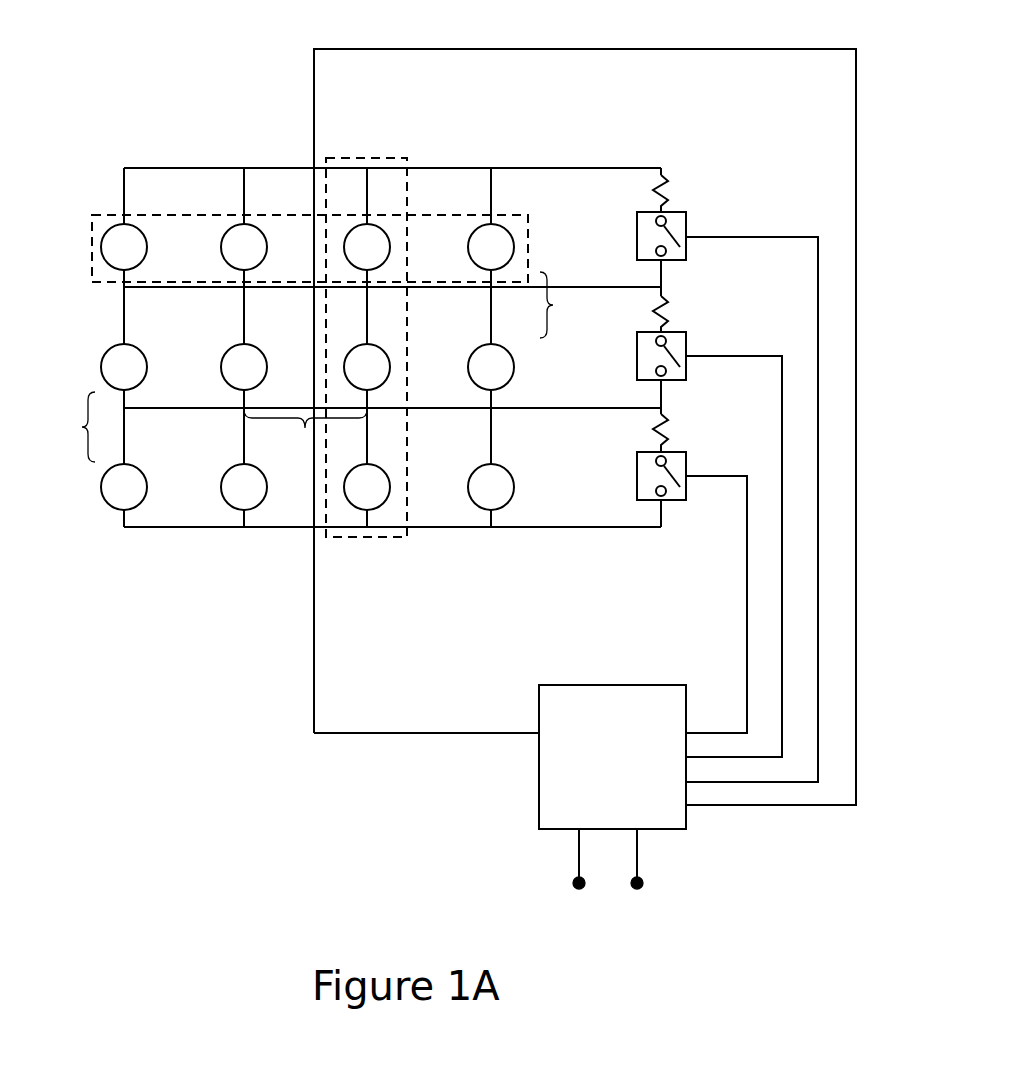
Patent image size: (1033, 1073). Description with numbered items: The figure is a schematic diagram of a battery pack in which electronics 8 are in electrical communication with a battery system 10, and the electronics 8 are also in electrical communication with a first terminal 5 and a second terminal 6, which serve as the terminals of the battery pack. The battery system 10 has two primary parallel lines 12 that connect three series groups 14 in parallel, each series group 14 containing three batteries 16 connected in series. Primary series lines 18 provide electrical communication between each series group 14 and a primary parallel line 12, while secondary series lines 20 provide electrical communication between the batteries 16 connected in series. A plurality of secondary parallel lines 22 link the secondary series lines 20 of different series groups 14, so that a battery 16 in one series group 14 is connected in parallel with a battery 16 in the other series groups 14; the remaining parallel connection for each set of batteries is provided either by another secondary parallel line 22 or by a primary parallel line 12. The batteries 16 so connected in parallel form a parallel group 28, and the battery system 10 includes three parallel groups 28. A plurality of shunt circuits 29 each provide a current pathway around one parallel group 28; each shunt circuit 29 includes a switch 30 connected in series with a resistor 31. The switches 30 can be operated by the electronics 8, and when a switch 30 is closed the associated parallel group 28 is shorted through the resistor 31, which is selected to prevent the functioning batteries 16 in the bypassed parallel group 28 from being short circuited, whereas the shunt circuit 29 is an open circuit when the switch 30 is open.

The battery system 10 is at (115, 95).
The primary parallel line 12 is at (183, 167).
The series group 14 is at (367, 158).
The battery 16 is at (468, 248).
The primary series line 18 is at (124, 200).
The secondary series line 20 is at (312, 367).
The secondary parallel line 22 is at (130, 297).
The parallel group 28 is at (528, 215).
The shunt circuit 29 is at (669, 148).
The switch 30 is at (688, 212).
The resistor 31 is at (680, 178).
The electronics 8 is at (478, 848).
The first terminal 5 is at (578, 892).
The second terminal 6 is at (636, 892).